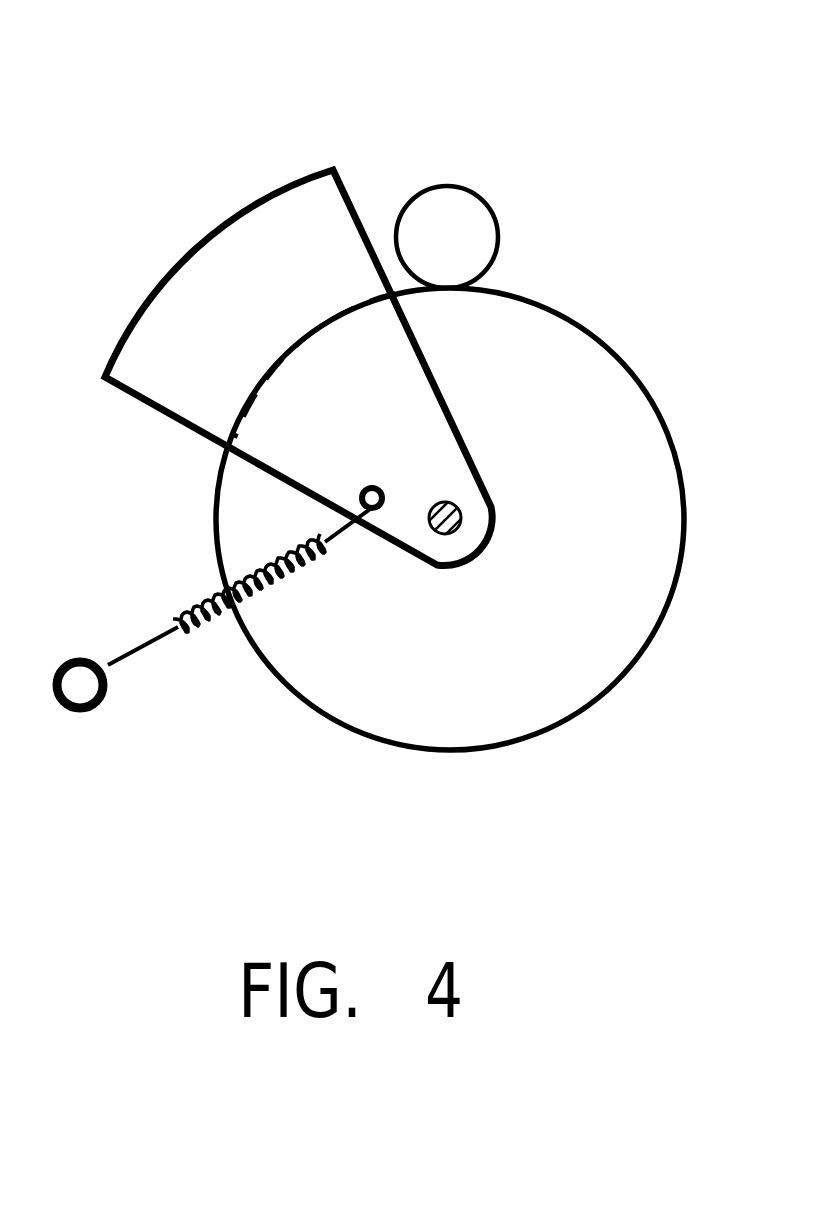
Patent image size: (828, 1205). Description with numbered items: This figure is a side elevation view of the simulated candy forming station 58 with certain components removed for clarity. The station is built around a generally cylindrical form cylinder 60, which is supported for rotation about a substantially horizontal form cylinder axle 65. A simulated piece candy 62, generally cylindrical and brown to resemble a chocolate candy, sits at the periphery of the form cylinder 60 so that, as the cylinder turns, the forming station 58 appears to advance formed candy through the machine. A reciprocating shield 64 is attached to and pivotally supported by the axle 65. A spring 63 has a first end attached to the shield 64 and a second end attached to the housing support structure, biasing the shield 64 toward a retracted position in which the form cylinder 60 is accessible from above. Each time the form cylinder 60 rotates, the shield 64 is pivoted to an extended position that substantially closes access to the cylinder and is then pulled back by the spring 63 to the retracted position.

The simulated candy forming station 58 is at (372, 130).
The form cylinder 60 is at (592, 392).
The simulated piece candy 62 is at (463, 225).
The spring 63 is at (183, 613).
The reciprocating shield 64 is at (185, 292).
The form cylinder axle 65 is at (462, 524).